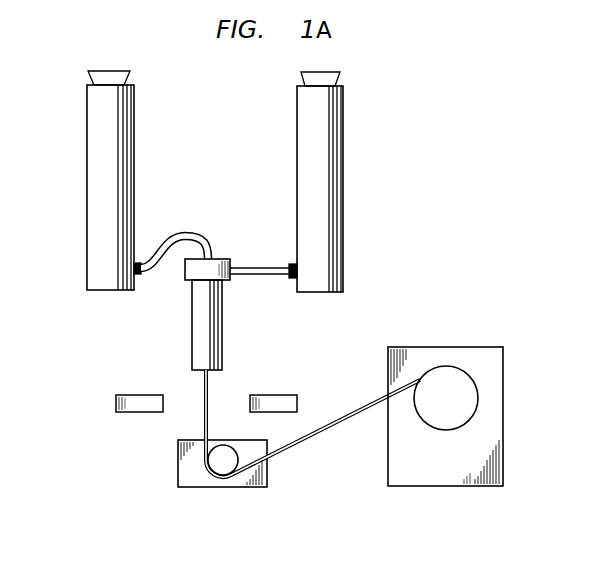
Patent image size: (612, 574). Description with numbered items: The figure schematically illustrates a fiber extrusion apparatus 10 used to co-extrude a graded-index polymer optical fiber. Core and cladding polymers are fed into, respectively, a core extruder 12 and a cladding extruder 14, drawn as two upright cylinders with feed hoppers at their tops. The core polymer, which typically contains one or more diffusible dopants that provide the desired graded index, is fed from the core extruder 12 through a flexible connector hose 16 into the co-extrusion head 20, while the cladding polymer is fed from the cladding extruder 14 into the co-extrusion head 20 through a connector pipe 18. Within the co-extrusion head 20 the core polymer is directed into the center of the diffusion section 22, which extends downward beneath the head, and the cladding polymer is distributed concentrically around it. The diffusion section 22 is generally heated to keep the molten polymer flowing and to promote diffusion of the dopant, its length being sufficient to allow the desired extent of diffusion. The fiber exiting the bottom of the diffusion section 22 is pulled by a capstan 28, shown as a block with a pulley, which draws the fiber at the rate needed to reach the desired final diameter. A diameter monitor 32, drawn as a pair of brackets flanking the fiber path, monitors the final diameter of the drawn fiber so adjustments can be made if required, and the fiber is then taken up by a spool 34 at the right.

The fiber extrusion apparatus 10 is at (553, 221).
The core extruder 12 is at (87, 155).
The cladding extruder 14 is at (297, 157).
The connector hose 16 is at (190, 232).
The connector pipe 18 is at (245, 268).
The co-extrusion head 20 is at (185, 280).
The diffusion section 22 is at (192, 326).
The capstan 28 is at (178, 476).
The diameter monitor 32 is at (130, 395).
The spool 34 is at (388, 479).